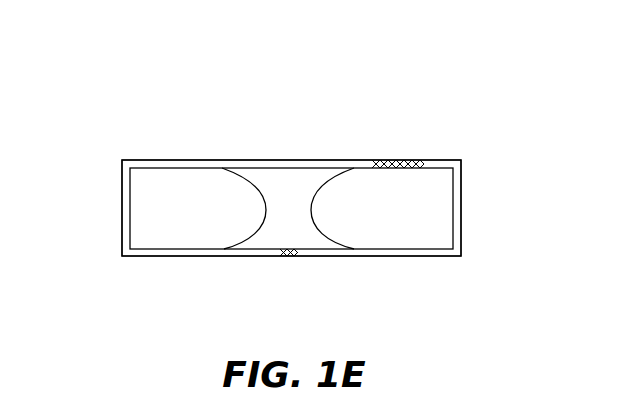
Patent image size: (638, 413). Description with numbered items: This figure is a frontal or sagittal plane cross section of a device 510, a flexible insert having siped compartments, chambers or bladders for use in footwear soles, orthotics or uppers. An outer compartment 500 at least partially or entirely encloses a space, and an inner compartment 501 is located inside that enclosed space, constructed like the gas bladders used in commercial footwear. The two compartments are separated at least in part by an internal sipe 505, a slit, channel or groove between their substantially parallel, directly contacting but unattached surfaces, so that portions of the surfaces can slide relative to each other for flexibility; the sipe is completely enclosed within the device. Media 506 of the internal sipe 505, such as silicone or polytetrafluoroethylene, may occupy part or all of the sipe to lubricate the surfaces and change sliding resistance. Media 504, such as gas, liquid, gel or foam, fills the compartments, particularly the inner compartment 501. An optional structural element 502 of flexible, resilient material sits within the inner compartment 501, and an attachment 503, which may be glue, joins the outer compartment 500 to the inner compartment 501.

The outer compartment 500 is at (318, 160).
The inner compartment 501 is at (294, 160).
The structural element 502 is at (268, 233).
The attachment 503 is at (286, 257).
The media 504 is at (173, 217).
The internal sipe 505 is at (177, 160).
The media of internal sipe 506 is at (405, 160).
The device 510 is at (293, 86).